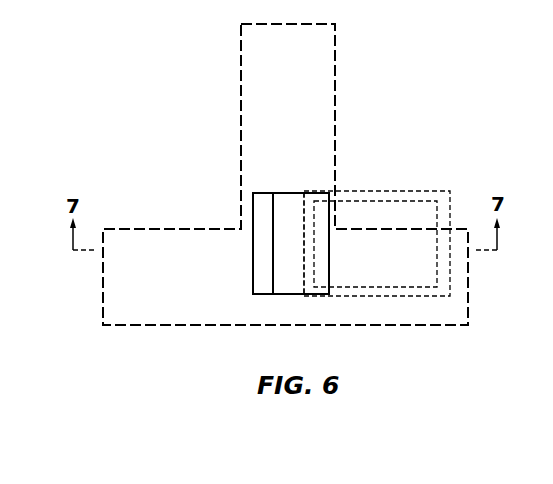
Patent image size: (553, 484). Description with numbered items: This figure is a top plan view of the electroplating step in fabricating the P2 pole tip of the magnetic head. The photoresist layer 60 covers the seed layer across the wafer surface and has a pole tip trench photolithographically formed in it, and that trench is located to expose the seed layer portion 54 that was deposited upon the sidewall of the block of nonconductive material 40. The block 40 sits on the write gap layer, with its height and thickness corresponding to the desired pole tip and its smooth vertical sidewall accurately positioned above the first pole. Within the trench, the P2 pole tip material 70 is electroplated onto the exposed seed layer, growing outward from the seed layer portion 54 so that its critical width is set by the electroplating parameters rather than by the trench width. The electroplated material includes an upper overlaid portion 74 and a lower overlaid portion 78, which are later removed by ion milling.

The photoresist layer 60 is at (384, 110).
The block of nonconductive material 40 is at (377, 231).
The upper overlaid portion 74 is at (375, 219).
The P2 pole tip material 70 is at (273, 233).
The lower overlaid portion 78 is at (267, 286).
The seed layer portion 54 is at (303, 202).